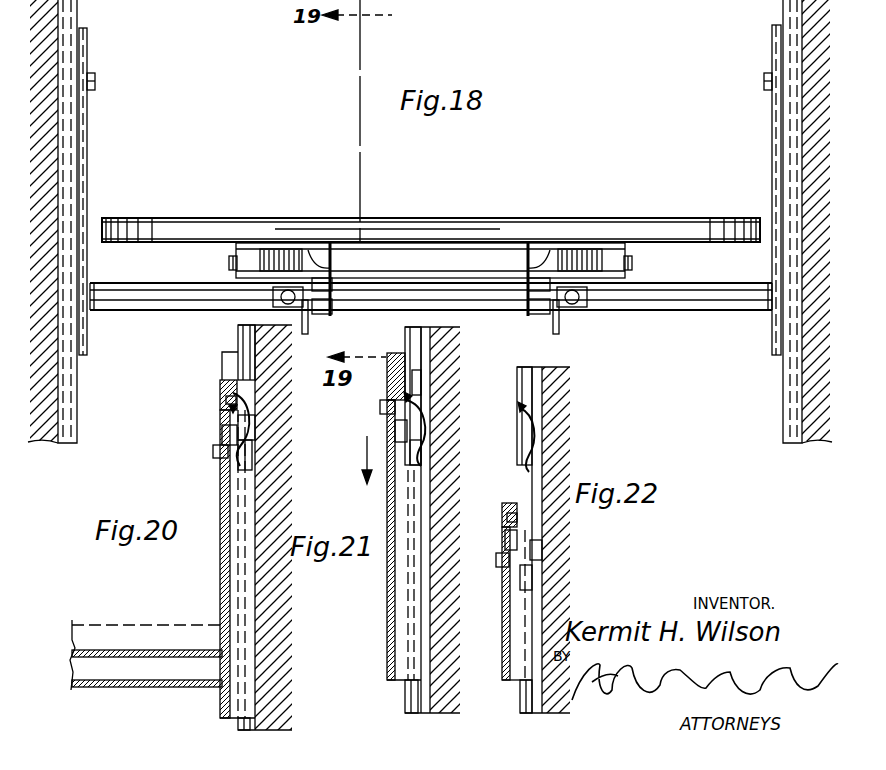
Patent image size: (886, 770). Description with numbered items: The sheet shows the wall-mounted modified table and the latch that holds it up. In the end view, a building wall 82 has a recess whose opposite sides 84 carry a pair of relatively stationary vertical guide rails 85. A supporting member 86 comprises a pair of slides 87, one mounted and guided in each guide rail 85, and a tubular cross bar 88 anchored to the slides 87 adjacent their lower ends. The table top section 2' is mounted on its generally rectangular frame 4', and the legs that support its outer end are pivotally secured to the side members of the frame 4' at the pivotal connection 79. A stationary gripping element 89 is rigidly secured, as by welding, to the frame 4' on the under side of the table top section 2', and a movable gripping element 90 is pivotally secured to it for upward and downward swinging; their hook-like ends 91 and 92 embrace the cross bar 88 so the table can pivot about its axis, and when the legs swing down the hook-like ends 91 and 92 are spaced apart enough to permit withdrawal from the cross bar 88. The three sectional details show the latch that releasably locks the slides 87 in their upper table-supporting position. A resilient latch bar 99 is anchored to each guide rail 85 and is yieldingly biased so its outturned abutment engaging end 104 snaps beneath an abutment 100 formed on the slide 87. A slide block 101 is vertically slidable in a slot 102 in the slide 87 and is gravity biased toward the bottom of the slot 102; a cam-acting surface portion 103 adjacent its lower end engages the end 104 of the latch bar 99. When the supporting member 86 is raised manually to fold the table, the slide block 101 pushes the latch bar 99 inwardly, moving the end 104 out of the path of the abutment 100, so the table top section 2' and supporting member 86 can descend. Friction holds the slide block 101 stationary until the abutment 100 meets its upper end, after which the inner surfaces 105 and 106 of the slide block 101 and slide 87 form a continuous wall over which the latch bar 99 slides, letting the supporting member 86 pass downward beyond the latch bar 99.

In FIG. 18, the table top section 2' is at (431, 213).
In FIG. 18, the frame 4' is at (430, 231).
In FIG. 18, the pivotal connection 79 is at (229, 264).
In FIG. 18, the building wall 82 is at (38, 441).
In FIG. 22, the building wall 82 is at (556, 452).
In FIG. 18, the sides of the recess 84 is at (68, 433).
In FIG. 20, the sides of the recess 84 is at (262, 631).
In FIG. 21, the sides of the recess 84 is at (432, 520).
In FIG. 22, the sides of the recess 84 is at (568, 606).
In FIG. 18, the guide rail 85 is at (70, 399).
In FIG. 20, the guide rail 85 is at (238, 329).
In FIG. 21, the guide rail 85 is at (405, 708).
In FIG. 22, the guide rail 85 is at (520, 708).
In FIG. 18, the supporting member 86 is at (166, 310).
In FIG. 18, the slide 87 is at (87, 160).
In FIG. 20, the slide 87 is at (220, 553).
In FIG. 21, the slide 87 is at (387, 580).
In FIG. 22, the slide 87 is at (502, 660).
In FIG. 18, the tubular cross bar 88 is at (676, 305).
In FIG. 20, the tubular cross bar 88 is at (135, 652).
In FIG. 18, the stationary gripping element 89 is at (330, 256).
In FIG. 18, the movable gripping element 90 is at (305, 334).
In FIG. 18, the hook-like end 91 is at (326, 320).
In FIG. 18, the hook-like end 92 is at (304, 268).
In FIG. 20, the resilient latch bar 99 is at (250, 422).
In FIG. 21, the resilient latch bar 99 is at (421, 420).
In FIG. 22, the resilient latch bar 99 is at (523, 420).
In FIG. 20, the abutment 100 is at (226, 399).
In FIG. 22, the abutment 100 is at (507, 516).
In FIG. 20, the slide block 101 is at (213, 455).
In FIG. 21, the slide block 101 is at (383, 405).
In FIG. 22, the slide block 101 is at (496, 560).
In FIG. 20, the slot 102 is at (222, 433).
In FIG. 21, the slot 102 is at (398, 433).
In FIG. 22, the slot 102 is at (505, 541).
In FIG. 20, the cam-acting surface portion 103 is at (250, 469).
In FIG. 21, the cam-acting surface portion 103 is at (421, 447).
In FIG. 22, the cam-acting surface portion 103 is at (548, 582).
In FIG. 20, the abutment engaging end 104 is at (229, 410).
In FIG. 21, the abutment engaging end 104 is at (412, 396).
In FIG. 22, the abutment engaging end 104 is at (520, 405).
In FIG. 20, the inner surface 105 is at (255, 437).
In FIG. 21, the inner surface 105 is at (416, 378).
In FIG. 22, the inner surface 105 is at (545, 557).
In FIG. 20, the inner surface 106 is at (220, 386).
In FIG. 21, the inner surface 106 is at (405, 362).
In FIG. 22, the inner surface 106 is at (517, 510).